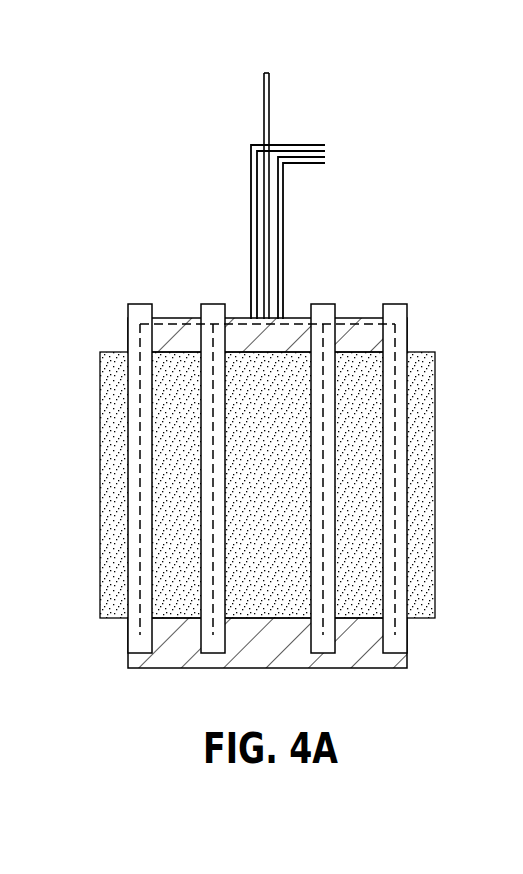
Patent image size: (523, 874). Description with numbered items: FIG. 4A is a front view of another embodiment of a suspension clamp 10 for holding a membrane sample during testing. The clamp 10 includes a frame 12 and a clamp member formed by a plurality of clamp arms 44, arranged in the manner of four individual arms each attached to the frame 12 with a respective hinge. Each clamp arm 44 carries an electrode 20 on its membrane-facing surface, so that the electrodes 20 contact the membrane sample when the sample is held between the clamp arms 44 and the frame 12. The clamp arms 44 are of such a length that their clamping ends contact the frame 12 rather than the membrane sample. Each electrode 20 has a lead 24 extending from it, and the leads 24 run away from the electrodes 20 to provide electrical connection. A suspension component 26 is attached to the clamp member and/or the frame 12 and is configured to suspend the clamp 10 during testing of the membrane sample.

The suspension clamp 10 is at (270, 380).
The frame 12 is at (363, 335).
The electrode 20 is at (212, 387).
The lead 24 is at (265, 228).
The suspension component 26 is at (272, 100).
The clamp arm 44 is at (207, 515).